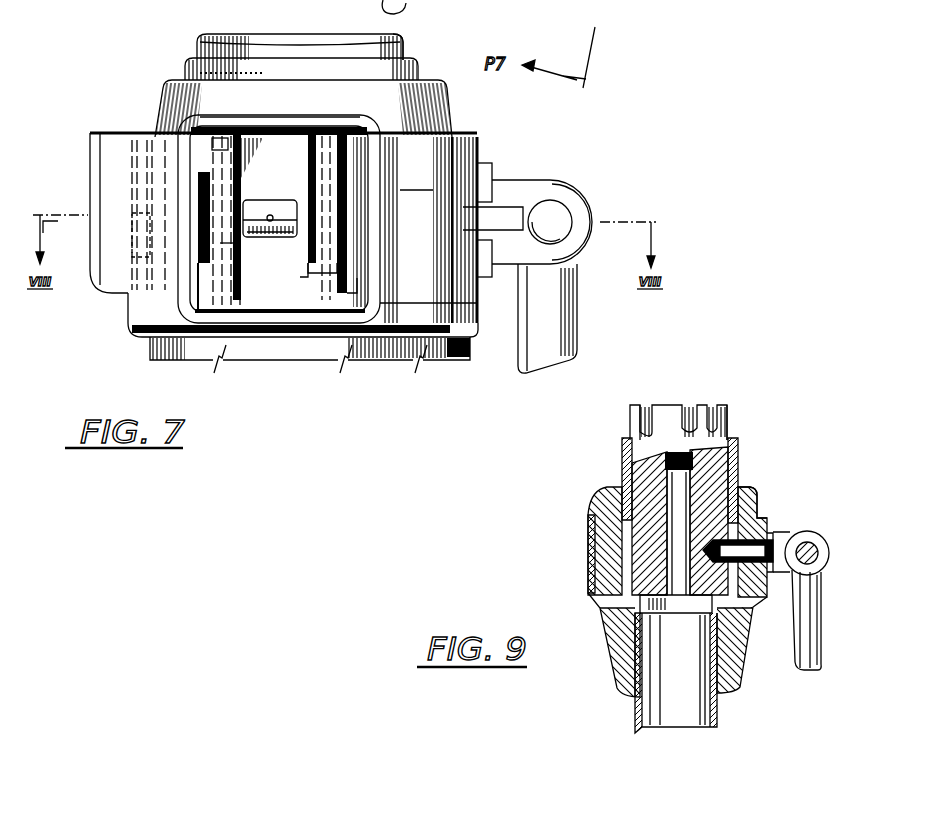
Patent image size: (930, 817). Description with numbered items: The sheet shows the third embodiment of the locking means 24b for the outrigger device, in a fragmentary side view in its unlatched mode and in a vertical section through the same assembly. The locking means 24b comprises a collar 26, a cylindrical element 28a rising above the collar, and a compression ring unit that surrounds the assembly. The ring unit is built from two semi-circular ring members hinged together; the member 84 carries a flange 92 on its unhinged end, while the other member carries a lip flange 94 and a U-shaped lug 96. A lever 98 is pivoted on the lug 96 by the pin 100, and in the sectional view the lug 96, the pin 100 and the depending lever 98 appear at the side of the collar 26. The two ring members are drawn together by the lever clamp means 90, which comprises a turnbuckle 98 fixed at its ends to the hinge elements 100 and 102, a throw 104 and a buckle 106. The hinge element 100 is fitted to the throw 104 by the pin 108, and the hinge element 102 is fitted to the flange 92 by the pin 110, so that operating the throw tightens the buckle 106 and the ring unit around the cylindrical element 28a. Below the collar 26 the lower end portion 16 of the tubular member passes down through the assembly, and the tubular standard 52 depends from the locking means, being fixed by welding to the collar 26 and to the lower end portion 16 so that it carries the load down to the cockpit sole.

In FIG. 7, the cylindrical element 28a is at (199, 44).
In FIG. 9, the cylindrical element 28a is at (730, 417).
In FIG. 7, the lower end portion 16 is at (414, 70).
In FIG. 9, the lower end portion 16 is at (733, 452).
In FIG. 7, the collar 26 is at (160, 110).
In FIG. 9, the collar 26 is at (747, 488).
In FIG. 7, the locking means 24b is at (452, 112).
In FIG. 9, the locking means 24b is at (599, 494).
In FIG. 7, the semi-circular ring member 84 is at (380, 214).
In FIG. 9, the semi-circular ring member 84 is at (592, 543).
In FIG. 7, the lever clamp means 90 is at (375, 130).
In FIG. 7, the flange 92 is at (310, 152).
In FIG. 7, the lip flange 94 is at (355, 288).
In FIG. 7, the U-shaped lug 96 is at (518, 188).
In FIG. 9, the U-shaped lug 96 is at (790, 533).
In FIG. 7, the lever (turnbuckle) 98 is at (282, 208).
In FIG. 9, the lever (turnbuckle) 98 is at (798, 660).
In FIG. 7, the pin (hinge element) 100 is at (222, 243).
In FIG. 9, the pin (hinge element) 100 is at (807, 537).
In FIG. 7, the hinge element 102 is at (307, 277).
In FIG. 7, the throw 104 is at (115, 155).
In FIG. 7, the buckle 106 is at (280, 118).
In FIG. 7, the pin 108 is at (223, 133).
In FIG. 7, the pin 110 is at (332, 128).
In FIG. 9, the tubular standard 52 is at (632, 713).